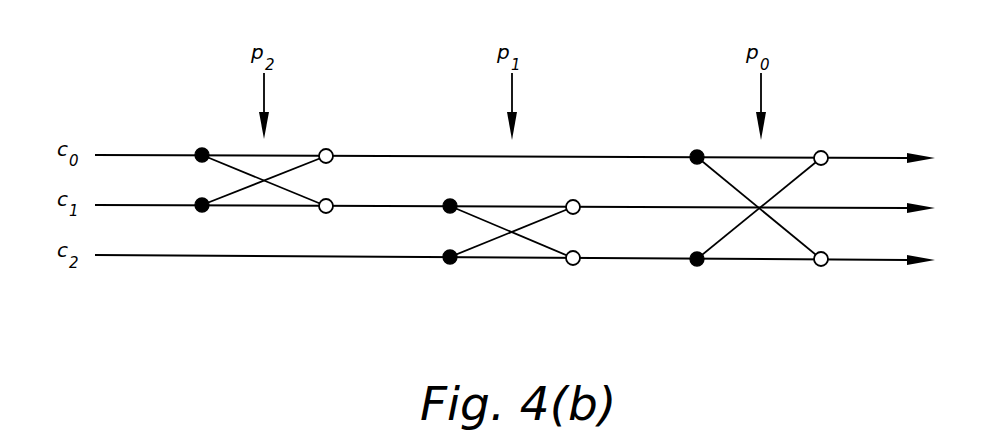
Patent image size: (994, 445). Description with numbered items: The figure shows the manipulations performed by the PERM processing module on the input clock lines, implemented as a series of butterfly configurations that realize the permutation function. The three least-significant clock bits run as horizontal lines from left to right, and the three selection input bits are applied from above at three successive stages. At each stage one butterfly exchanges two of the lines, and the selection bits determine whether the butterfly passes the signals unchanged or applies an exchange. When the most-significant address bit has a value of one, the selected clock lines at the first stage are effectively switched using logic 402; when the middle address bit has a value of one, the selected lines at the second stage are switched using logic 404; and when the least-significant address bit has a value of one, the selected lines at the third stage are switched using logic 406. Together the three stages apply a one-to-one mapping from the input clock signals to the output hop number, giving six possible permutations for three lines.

The logic 402 is at (193, 267).
The logic 404 is at (441, 269).
The logic 406 is at (688, 269).